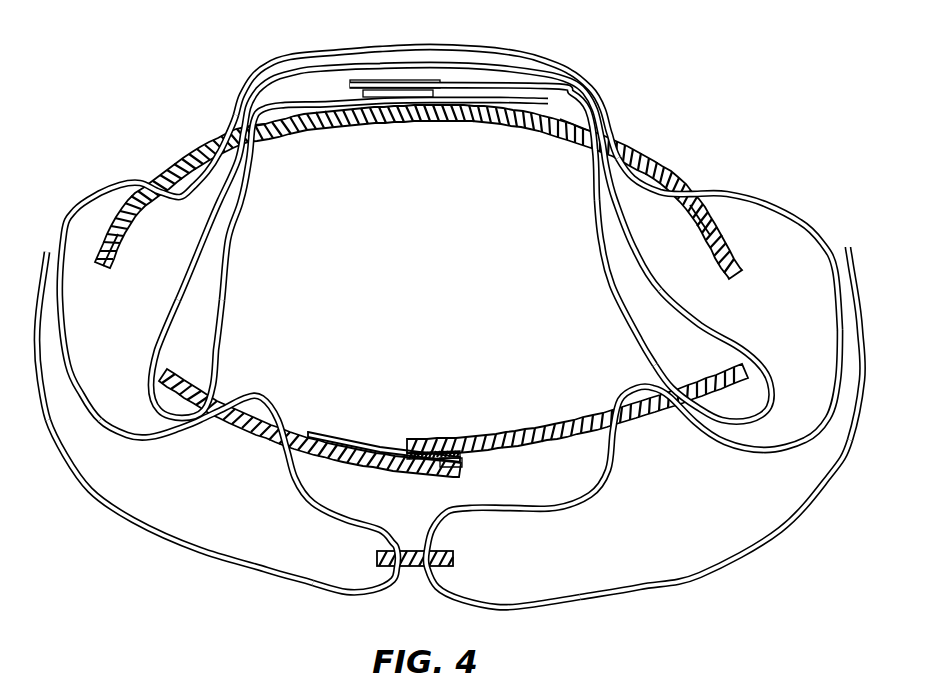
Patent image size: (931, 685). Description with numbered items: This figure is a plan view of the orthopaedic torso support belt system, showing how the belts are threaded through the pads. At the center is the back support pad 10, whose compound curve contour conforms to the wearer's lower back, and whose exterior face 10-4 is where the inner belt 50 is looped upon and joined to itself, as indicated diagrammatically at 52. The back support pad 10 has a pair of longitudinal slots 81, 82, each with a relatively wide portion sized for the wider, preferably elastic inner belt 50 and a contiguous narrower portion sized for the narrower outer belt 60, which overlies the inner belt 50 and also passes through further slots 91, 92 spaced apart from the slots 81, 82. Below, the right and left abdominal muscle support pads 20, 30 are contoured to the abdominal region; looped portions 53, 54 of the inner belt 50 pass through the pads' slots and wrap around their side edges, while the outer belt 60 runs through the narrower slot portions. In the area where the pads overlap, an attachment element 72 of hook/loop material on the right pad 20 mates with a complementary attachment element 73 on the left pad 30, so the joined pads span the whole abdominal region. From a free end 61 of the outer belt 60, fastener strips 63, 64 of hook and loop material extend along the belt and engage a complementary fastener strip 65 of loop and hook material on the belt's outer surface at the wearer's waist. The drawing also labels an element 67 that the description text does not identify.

The back support pad 10 is at (445, 303).
The exterior face of the back support pad 10-4 is at (418, 157).
The abdominal muscle support pad 20 is at (338, 421).
The abdominal muscle support pad 30 is at (503, 435).
The inner belt 50 is at (603, 272).
The looped and joined portion of the inner belt 52 is at (363, 81).
The looped portion of the inner belt 53 is at (152, 403).
The looped portion of the inner belt 54 is at (774, 408).
The outer belt 60 is at (414, 46).
The free end of the outer belt 61 is at (34, 304).
The fastener strip 63 is at (93, 484).
The fastener strip 64 is at (80, 212).
The complementary fastener strip 65 is at (785, 203).
The fiber free end 67 is at (860, 303).
The attachment element 72 is at (464, 463).
The attachment element 73 is at (408, 455).
The first longitudinal slot 81 is at (255, 138).
The first longitudinal slot 82 is at (578, 138).
The further slot 91 is at (140, 196).
The further slot 92 is at (680, 188).